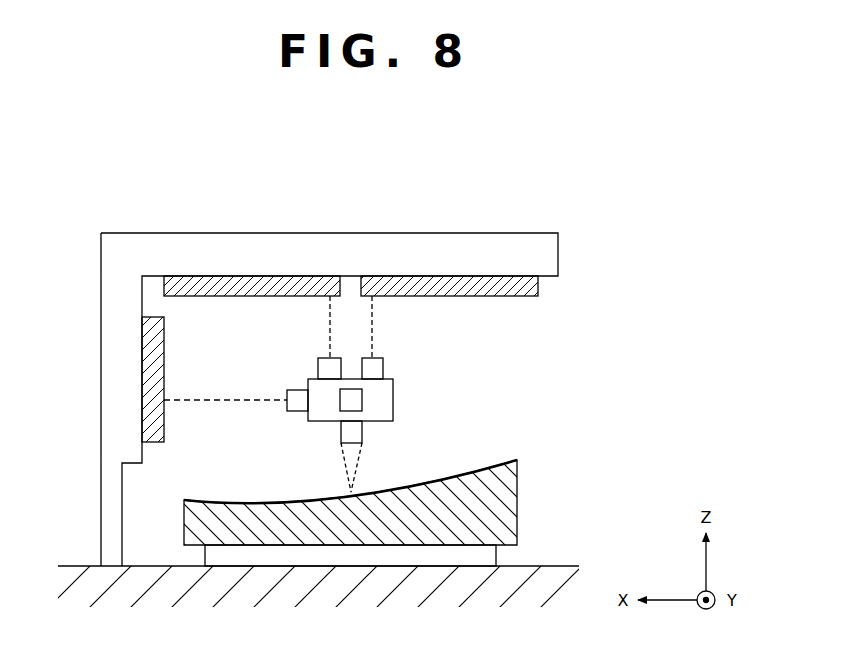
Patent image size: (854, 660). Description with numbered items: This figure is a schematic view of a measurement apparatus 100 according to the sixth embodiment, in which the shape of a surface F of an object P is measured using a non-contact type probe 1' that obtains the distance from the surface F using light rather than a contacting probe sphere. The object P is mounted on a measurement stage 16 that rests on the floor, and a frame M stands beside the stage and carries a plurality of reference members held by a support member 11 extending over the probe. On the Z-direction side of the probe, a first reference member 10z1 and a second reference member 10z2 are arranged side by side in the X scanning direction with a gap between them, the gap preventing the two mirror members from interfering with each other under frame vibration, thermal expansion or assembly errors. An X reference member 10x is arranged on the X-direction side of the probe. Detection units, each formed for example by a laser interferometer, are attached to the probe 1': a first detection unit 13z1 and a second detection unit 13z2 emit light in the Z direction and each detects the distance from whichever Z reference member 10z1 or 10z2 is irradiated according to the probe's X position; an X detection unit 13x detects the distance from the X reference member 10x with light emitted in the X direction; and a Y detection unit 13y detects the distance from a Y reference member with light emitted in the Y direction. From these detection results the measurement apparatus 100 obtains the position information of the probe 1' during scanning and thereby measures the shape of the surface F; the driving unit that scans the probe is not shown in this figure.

The measurement apparatus 100 is at (653, 190).
The frame M is at (70, 212).
The support member 11 is at (558, 247).
The first reference member 10z1 is at (218, 282).
The second reference member 10z2 is at (488, 284).
The X reference member 10x is at (144, 414).
The first detection unit 13z1 is at (318, 362).
The second detection unit 13z2 is at (386, 358).
The X detection unit 13x is at (296, 390).
The Y detection unit 13y is at (362, 400).
The probe 1' is at (322, 456).
The surface F is at (468, 480).
The object P is at (517, 504).
The measurement stage 16 is at (205, 557).